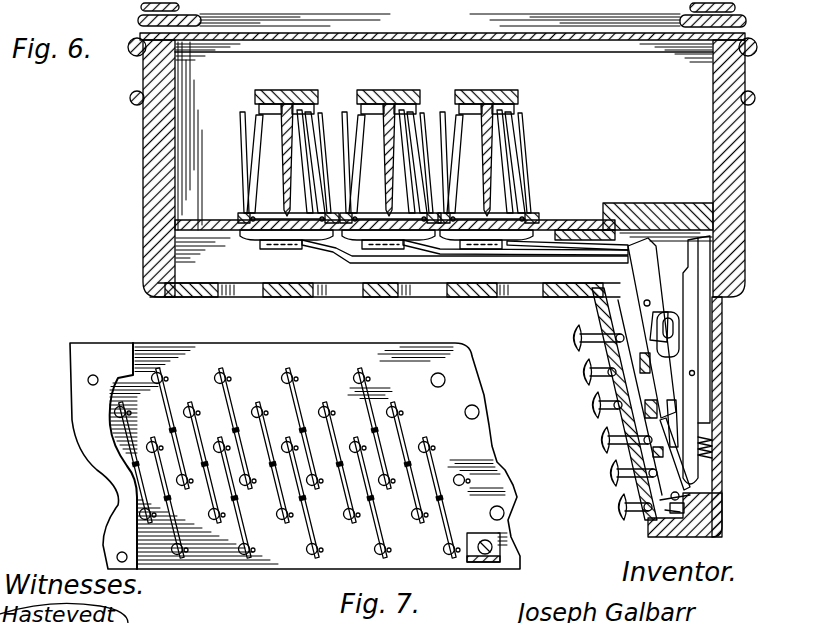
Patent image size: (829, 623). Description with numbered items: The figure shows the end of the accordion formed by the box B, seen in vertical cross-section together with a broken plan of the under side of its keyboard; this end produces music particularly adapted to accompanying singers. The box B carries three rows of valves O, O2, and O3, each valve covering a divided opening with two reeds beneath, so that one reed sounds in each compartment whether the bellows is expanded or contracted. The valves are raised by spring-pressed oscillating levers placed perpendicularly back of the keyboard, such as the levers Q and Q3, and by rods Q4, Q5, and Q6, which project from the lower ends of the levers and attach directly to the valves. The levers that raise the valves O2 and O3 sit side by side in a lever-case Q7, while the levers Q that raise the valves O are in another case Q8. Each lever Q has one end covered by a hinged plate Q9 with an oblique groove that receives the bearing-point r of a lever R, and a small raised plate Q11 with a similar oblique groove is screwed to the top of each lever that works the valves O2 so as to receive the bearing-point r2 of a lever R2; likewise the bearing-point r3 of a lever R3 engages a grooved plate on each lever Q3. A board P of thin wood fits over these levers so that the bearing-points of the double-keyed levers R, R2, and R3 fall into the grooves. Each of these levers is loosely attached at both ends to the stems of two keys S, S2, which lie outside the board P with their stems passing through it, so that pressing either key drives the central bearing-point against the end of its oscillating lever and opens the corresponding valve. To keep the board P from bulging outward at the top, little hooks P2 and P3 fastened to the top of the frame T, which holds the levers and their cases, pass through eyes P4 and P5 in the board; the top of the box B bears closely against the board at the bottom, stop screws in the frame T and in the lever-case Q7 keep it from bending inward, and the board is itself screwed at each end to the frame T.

In FIG. 6, the box B is at (449, 150).
In FIG. 6, the valves O is at (461, 238).
In FIG. 6, the valves O2 is at (360, 238).
In FIG. 6, the valves O3 is at (268, 238).
In FIG. 6, the rod Q6 is at (353, 262).
In FIG. 6, the rod Q5 is at (415, 258).
In FIG. 6, the rod Q4 is at (576, 254).
In FIG. 6, the board P is at (592, 300).
In FIG. 7, the board P is at (462, 367).
In FIG. 6, the hook P2 is at (574, 340).
In FIG. 6, the hook P3 is at (697, 538).
In FIG. 7, the eye P4 is at (493, 562).
In FIG. 6, the eye P5 is at (665, 525).
In FIG. 6, the key S2 is at (582, 373).
In FIG. 7, the key S2 is at (223, 368).
In FIG. 6, the key S is at (600, 467).
In FIG. 7, the key S is at (305, 560).
In FIG. 6, the lever R2 is at (594, 384).
In FIG. 7, the lever R2 is at (172, 398).
In FIG. 6, the lever R3 is at (612, 476).
In FIG. 7, the lever R3 is at (197, 430).
In FIG. 6, the lever R is at (640, 515).
In FIG. 7, the lever R is at (438, 465).
In FIG. 6, the bearing-point r2 is at (606, 421).
In FIG. 7, the bearing-point r2 is at (176, 431).
In FIG. 6, the bearing-point r3 is at (608, 455).
In FIG. 7, the bearing-point r3 is at (207, 467).
In FIG. 6, the bearing-point r is at (685, 456).
In FIG. 7, the bearing-point r is at (240, 498).
In FIG. 6, the lever-case Q7 is at (668, 311).
In FIG. 6, the oscillating lever Q3 is at (653, 343).
In FIG. 6, the small plate Q11 is at (646, 362).
In FIG. 6, the oscillating lever Q is at (697, 393).
In FIG. 6, the lever-case Q8 is at (705, 418).
In FIG. 6, the hinged plate Q9 is at (674, 458).
In FIG. 6, the frame T is at (722, 433).